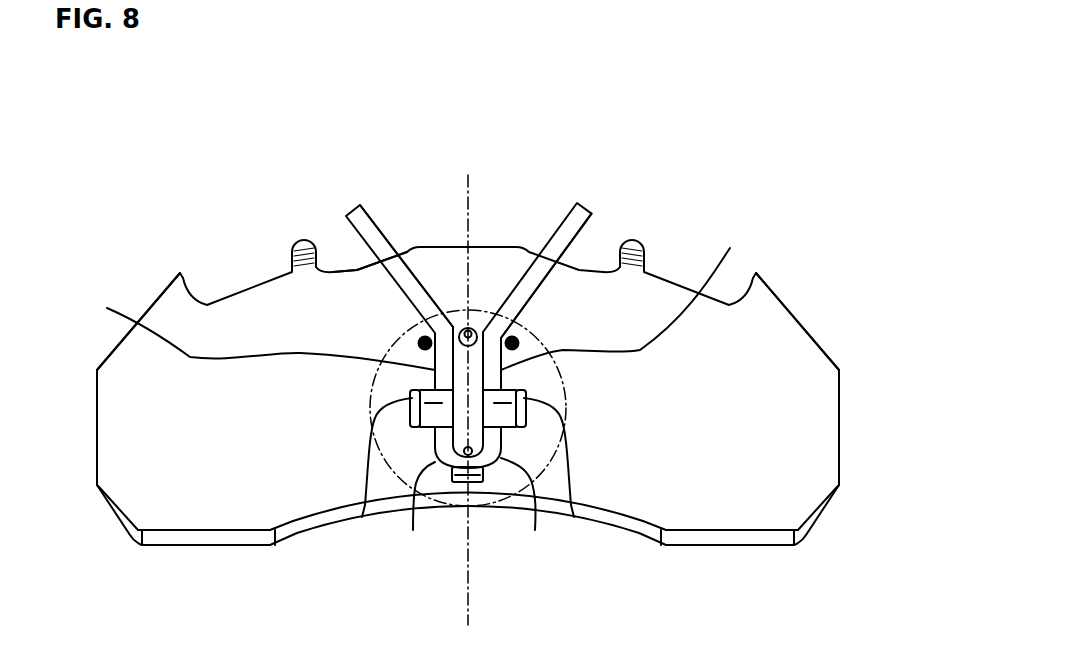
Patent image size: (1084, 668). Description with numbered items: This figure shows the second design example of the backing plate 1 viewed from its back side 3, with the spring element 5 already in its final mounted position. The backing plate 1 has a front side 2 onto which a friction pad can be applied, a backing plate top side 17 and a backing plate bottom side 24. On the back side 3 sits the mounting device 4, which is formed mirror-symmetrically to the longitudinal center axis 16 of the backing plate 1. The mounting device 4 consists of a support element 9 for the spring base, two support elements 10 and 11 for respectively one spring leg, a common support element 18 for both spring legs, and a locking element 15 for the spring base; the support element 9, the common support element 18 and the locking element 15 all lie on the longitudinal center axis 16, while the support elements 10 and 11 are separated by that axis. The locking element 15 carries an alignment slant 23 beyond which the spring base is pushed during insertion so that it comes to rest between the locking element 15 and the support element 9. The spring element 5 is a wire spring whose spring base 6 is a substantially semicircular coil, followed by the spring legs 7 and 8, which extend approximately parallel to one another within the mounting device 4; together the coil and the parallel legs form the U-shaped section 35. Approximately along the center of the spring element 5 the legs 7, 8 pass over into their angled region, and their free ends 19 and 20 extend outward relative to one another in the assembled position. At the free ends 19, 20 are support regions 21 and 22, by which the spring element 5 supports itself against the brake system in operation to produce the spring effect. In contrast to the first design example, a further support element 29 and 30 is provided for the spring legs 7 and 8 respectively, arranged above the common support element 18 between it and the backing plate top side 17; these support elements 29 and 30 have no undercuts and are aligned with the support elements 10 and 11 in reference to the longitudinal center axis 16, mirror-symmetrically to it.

The backing plate 1 is at (814, 235).
The front side 2 is at (860, 407).
The back side 3 is at (766, 350).
The mounting device 4 is at (392, 487).
The spring element 5 is at (437, 150).
The spring base 6 is at (413, 530).
The spring leg 7 is at (621, 297).
The spring leg 8 is at (261, 326).
The support element for the spring base 9 is at (452, 482).
The support element for a spring leg 10 is at (365, 513).
The support element for a spring leg 11 is at (574, 517).
The locking element 15 is at (535, 530).
The longitudinal center axis 16 is at (470, 183).
The backing plate top side 17 is at (349, 258).
The common support element 18 is at (452, 322).
The free end 19 is at (593, 212).
The free end 20 is at (357, 204).
The support region 21 is at (572, 210).
The support region 22 is at (366, 213).
The alignment slant 23 is at (490, 470).
The backing plate bottom side 24 is at (298, 553).
The further support element 29 is at (519, 343).
The further support element 30 is at (418, 343).
The U-shaped section 35 is at (483, 482).